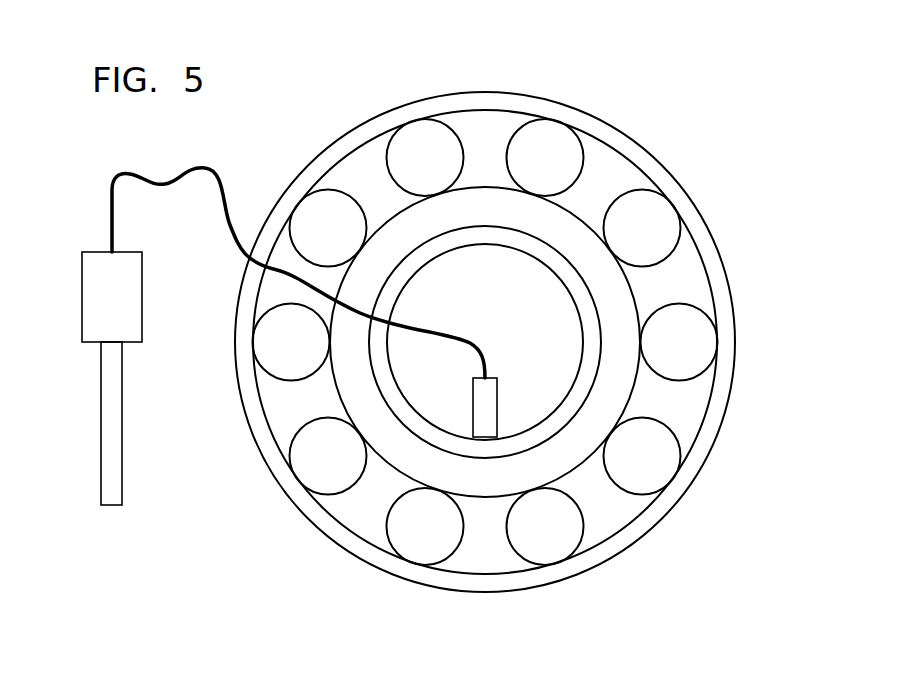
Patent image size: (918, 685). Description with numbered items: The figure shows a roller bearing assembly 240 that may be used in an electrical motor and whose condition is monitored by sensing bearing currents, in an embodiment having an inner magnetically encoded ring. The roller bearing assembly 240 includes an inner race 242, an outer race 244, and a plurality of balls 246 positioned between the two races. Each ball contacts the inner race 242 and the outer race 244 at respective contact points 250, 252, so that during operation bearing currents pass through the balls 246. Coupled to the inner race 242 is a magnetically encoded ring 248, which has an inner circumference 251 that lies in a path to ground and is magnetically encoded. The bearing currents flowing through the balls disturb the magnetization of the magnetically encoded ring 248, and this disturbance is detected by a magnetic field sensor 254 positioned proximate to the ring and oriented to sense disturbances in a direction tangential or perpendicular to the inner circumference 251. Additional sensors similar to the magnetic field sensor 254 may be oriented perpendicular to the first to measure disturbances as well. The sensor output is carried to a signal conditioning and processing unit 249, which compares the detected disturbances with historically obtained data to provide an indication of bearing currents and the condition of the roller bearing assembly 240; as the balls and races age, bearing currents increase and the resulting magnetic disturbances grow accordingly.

The roller bearing assembly 240 is at (772, 118).
The inner race 242 is at (390, 237).
The outer race 244 is at (723, 262).
The balls 246 is at (312, 222).
The magnetically encoded ring 248 is at (532, 248).
The signal conditioning and processing unit 249 is at (82, 278).
The contact points 250 is at (600, 430).
The inner circumference 251 is at (447, 253).
The contact points 252 is at (298, 478).
The magnetic field sensor 254 is at (498, 422).